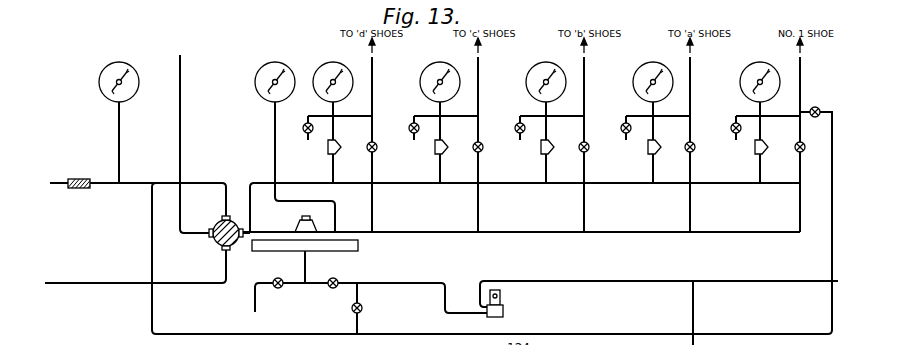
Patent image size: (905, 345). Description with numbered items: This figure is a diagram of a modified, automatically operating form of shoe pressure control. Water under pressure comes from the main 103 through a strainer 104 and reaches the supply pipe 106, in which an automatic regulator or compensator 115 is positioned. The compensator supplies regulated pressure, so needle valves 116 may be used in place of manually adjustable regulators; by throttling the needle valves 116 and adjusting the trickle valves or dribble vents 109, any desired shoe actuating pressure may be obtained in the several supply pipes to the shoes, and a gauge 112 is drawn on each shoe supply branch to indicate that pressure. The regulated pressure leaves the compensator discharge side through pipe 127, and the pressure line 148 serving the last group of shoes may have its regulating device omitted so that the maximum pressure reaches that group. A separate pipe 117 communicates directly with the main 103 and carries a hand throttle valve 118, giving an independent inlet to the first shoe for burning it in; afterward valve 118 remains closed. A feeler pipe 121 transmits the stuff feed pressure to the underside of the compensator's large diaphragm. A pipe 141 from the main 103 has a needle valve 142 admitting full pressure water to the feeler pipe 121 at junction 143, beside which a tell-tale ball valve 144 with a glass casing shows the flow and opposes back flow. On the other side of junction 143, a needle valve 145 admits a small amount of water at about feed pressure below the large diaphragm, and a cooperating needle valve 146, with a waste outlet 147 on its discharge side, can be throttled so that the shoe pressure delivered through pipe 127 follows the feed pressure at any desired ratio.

The main 103 is at (138, 182).
The strainer 104 is at (78, 179).
The supply pipe 106 is at (267, 232).
The trickle valve 109 is at (305, 134).
The pressure gauge 112 is at (320, 69).
The automatic regulator or compensator 115 is at (337, 248).
The needle valve 116 is at (377, 151).
The pipe 117 is at (614, 333).
The hand throttle valve 118 is at (818, 107).
The feeler pipe 121 is at (620, 280).
The pipe 127 is at (522, 233).
The pipe 141 is at (359, 322).
The needle valve 142 is at (351, 311).
The junction 143 is at (360, 283).
The tell-tale ball valve 144 is at (503, 298).
The needle valve 145 is at (329, 289).
The needle valve 146 is at (276, 278).
The waste outlet 147 is at (253, 307).
The pipe 148 is at (374, 205).